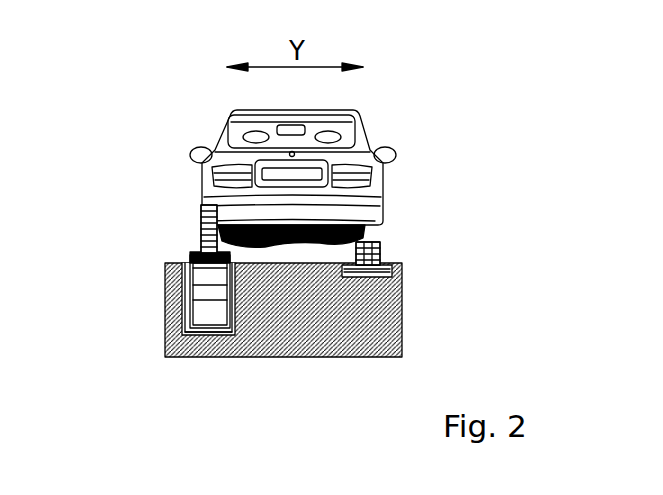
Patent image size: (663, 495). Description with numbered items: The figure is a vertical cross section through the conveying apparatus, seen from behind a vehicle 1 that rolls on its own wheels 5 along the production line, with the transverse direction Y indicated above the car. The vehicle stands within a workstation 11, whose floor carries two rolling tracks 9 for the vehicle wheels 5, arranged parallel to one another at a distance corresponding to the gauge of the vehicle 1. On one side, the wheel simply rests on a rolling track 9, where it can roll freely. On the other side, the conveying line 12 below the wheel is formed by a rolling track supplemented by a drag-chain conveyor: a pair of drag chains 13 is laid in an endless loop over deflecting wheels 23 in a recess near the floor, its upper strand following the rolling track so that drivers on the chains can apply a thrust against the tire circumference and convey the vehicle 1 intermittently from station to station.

The vehicle 1 is at (365, 130).
The vehicle wheel 5 is at (205, 249).
The rolling track 9 is at (386, 265).
The workstation 11 is at (283, 350).
The conveying line 12 is at (190, 247).
The drag chain 13 is at (229, 335).
The deflecting wheel 23 is at (211, 335).